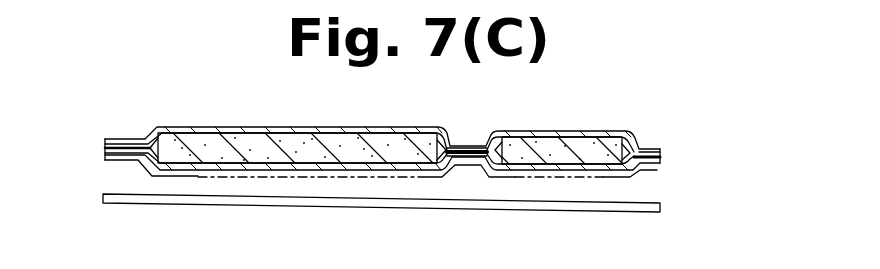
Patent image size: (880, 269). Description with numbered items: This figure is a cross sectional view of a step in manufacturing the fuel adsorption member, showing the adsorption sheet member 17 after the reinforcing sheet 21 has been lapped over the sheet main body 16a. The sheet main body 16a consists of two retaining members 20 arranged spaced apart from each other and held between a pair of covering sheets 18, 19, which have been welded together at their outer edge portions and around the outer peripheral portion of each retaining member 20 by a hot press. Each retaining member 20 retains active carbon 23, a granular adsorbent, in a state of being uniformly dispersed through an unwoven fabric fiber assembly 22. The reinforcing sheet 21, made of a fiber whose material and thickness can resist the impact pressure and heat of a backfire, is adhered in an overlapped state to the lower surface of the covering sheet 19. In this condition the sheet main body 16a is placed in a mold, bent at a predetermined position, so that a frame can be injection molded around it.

The sheet main body 16a is at (661, 151).
The adsorption sheet member 17 is at (168, 127).
The covering sheet 18 is at (653, 143).
The covering sheet 19 is at (645, 168).
The retaining member 20 is at (270, 132).
The reinforcing sheet 21 is at (104, 163).
The unwoven fabric fiber assembly 22 is at (418, 142).
The active carbon 23 is at (397, 140).